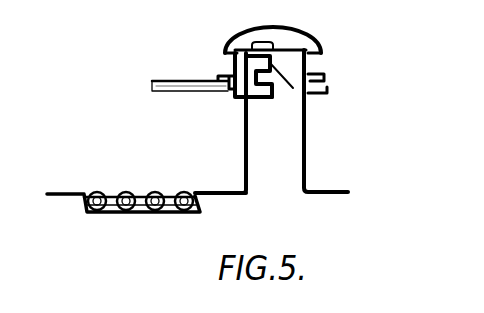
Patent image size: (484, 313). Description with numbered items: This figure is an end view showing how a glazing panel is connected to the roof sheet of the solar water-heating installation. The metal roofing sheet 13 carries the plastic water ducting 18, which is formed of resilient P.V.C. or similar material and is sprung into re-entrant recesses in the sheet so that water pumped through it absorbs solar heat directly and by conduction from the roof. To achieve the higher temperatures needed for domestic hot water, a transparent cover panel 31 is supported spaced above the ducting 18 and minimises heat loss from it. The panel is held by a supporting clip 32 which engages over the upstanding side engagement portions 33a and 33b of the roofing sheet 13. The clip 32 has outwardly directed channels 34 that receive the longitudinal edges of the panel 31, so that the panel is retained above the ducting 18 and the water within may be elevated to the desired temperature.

The metal roofing sheet 13 is at (240, 197).
The plastic water ducting 18 is at (123, 195).
The transparent cover panel 31 is at (175, 83).
The supporting clip 32 is at (320, 60).
The upstanding side engagement portion 33a is at (245, 135).
The upstanding side engagement portion 33b is at (305, 143).
The outwardly directed channel 34 is at (226, 78).